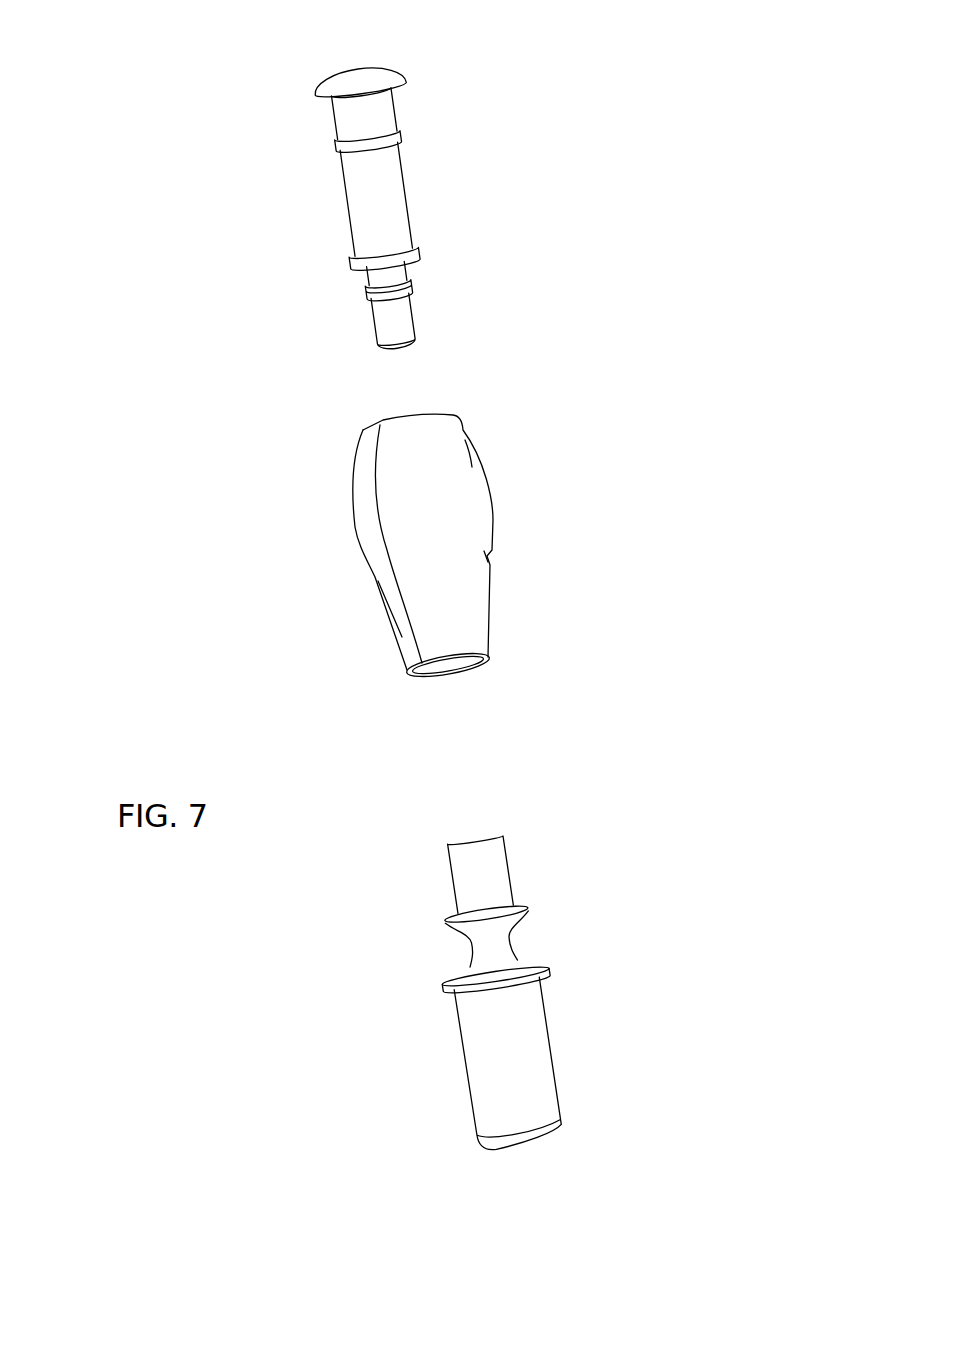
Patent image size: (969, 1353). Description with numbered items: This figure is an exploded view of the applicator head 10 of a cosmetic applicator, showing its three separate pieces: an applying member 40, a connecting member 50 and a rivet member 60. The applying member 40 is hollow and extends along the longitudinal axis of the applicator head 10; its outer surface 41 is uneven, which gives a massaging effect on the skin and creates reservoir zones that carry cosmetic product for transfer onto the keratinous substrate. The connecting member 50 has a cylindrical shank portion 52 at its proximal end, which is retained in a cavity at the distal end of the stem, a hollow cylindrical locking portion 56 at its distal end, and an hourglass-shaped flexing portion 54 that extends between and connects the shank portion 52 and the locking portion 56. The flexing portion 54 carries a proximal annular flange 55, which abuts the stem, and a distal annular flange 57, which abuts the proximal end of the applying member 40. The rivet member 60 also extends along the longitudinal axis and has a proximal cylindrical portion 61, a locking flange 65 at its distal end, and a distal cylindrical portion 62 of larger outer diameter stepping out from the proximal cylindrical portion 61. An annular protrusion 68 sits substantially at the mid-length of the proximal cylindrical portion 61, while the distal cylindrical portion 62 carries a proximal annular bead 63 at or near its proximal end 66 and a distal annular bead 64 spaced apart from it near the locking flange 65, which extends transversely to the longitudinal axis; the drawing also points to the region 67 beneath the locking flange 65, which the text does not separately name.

The applicator head 10 is at (168, 472).
The applying member 40 is at (586, 503).
The outer surface 41 is at (375, 577).
The connecting member 50 is at (361, 1000).
The shank portion 52 is at (533, 1068).
The flexing portion 54 is at (500, 940).
The proximal annular flange 55 is at (538, 968).
The locking portion 56 is at (497, 872).
The distal annular flange 57 is at (508, 902).
The rivet member 60 is at (222, 154).
The proximal cylindrical portion 61 is at (403, 322).
The distal cylindrical portion 62 is at (357, 187).
The proximal annular bead 63 is at (415, 253).
The distal annular bead 64 is at (388, 140).
The locking flange 65 is at (378, 73).
The proximal end 66 is at (355, 267).
The shaft 67 is at (333, 97).
The annular protrusion 68 is at (407, 293).